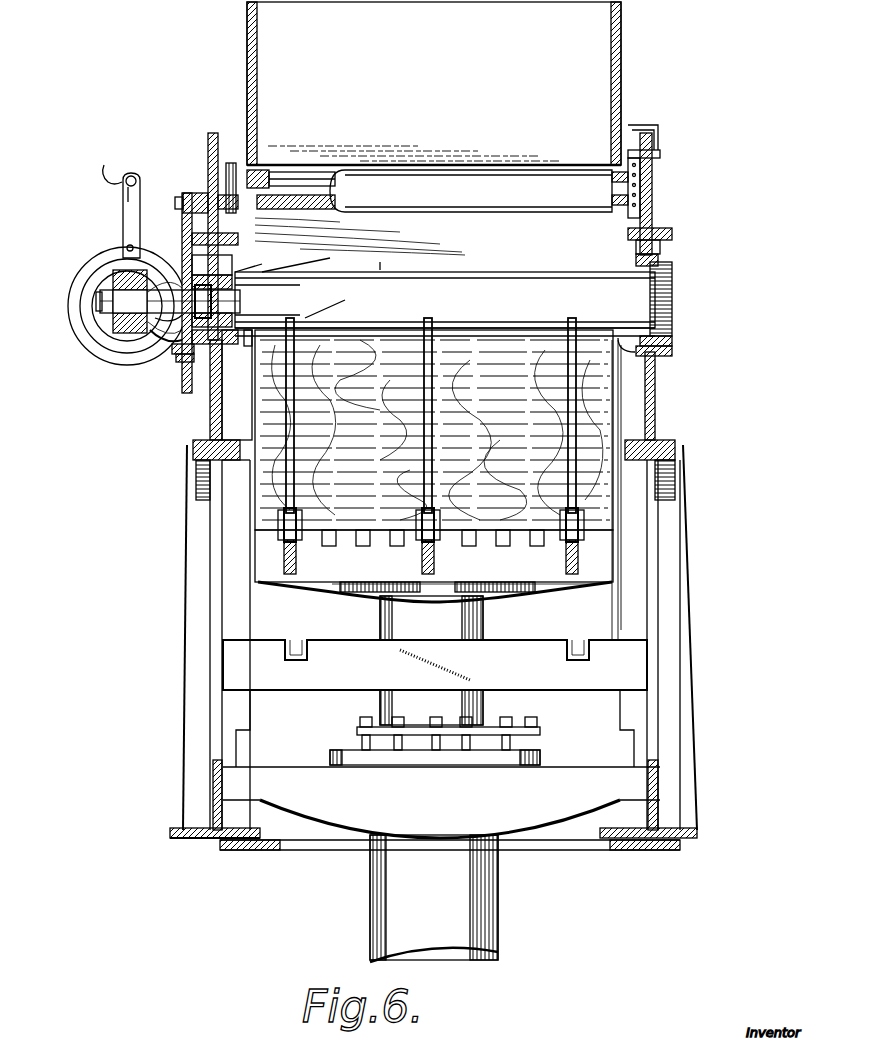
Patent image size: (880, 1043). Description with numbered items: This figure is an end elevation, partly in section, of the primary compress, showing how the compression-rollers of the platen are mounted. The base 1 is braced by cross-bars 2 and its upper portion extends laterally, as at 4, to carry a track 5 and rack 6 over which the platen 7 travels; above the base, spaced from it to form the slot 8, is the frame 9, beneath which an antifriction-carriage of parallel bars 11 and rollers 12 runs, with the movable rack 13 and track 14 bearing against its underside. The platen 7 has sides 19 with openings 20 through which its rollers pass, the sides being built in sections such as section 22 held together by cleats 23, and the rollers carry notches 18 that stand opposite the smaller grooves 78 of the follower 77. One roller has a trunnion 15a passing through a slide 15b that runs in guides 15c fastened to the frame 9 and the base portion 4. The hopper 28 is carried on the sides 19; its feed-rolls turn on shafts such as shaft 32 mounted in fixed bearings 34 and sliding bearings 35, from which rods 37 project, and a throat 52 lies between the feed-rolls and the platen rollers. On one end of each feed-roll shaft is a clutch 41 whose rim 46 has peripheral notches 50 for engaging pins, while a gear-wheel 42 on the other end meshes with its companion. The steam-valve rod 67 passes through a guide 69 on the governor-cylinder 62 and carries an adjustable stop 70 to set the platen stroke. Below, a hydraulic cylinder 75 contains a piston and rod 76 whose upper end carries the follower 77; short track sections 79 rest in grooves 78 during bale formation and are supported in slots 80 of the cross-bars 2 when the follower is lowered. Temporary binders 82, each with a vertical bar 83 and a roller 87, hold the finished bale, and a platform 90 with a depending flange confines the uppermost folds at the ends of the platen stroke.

The hopper 28 is at (434, 83).
The bearings 35 is at (258, 172).
The shaft 32 is at (320, 192).
The rods 37 is at (471, 191).
The throat 52 is at (370, 241).
The track 14 is at (271, 256).
The openings 20 is at (305, 256).
The platen 7 is at (382, 257).
The cylinder 75 is at (445, 617).
The notches 18 is at (340, 305).
The frame 9 is at (653, 182).
The rim 46 is at (658, 130).
The bearings 34 is at (658, 160).
The clutch 41 is at (640, 190).
The notches 50 is at (640, 200).
The slot 8 is at (655, 228).
The parallel bars 11 is at (660, 246).
The stop 70 is at (672, 280).
The rack 6 is at (660, 336).
The track 5 is at (672, 350).
The cleats 23 is at (625, 350).
The section 22 is at (655, 380).
The binders 82 is at (575, 430).
The vertical bar 83 is at (578, 504).
The roller 87 is at (278, 528).
The follower 77 is at (434, 556).
The grooves 78 is at (396, 548).
The track 79 is at (298, 580).
The cross-bars 2 is at (435, 665).
The slots 80 is at (293, 662).
The piston and rod 76 is at (435, 731).
The base 1 is at (424, 641).
The lateral portion of the base 4 is at (210, 420).
The sides 19 is at (237, 385).
The platform 90 is at (256, 362).
The rollers 12 is at (204, 252).
The gear-wheel 42 is at (232, 163).
The rack 13 is at (182, 248).
The governor-cylinder 62 is at (85, 285).
The trunnion 15a is at (118, 320).
The slide 15b is at (160, 338).
The guides 15c is at (172, 340).
The rod 67 is at (135, 174).
The guide 69 is at (121, 192).